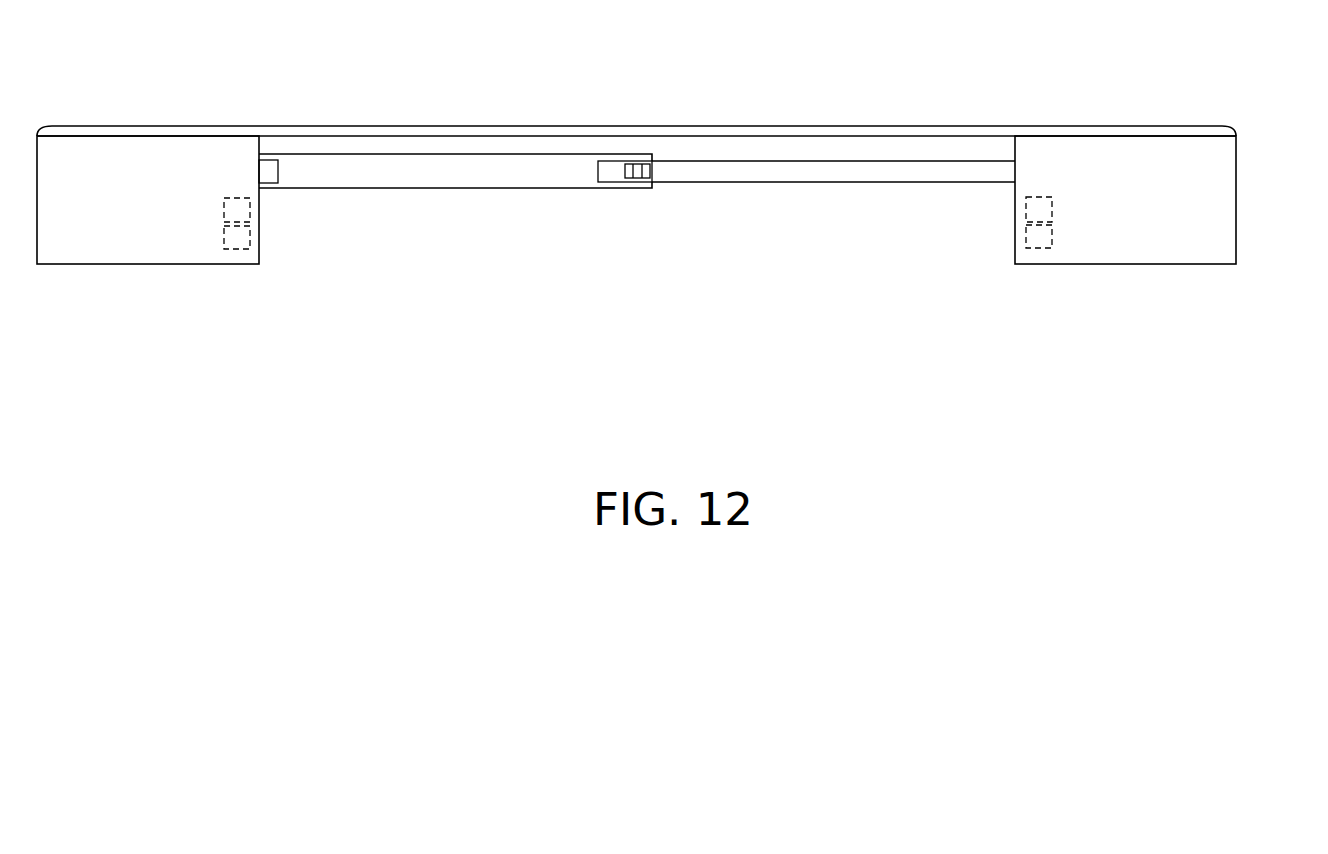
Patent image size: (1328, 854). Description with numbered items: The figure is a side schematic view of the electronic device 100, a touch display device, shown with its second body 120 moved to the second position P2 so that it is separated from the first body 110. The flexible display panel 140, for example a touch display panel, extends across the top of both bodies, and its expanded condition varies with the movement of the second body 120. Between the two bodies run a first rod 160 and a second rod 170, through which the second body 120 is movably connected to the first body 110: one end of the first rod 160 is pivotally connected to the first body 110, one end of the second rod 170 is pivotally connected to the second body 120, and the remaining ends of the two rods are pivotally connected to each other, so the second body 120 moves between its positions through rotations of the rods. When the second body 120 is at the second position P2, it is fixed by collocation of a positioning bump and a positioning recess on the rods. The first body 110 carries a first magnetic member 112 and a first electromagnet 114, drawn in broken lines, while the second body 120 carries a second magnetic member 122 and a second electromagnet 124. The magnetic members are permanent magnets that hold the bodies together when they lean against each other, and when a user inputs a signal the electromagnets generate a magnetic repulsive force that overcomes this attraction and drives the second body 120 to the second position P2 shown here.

The electronic device 100 is at (1324, 485).
The first body 110 is at (57, 243).
The first magnetic member 112 is at (233, 249).
The first electromagnet 114 is at (224, 200).
The second body 120 is at (1138, 240).
The second magnetic member 122 is at (1043, 250).
The second electromagnet 124 is at (1052, 200).
The flexible display panel 140 is at (378, 130).
The first rod 160 is at (515, 180).
The second rod 170 is at (865, 172).
The second position P2 is at (1218, 285).